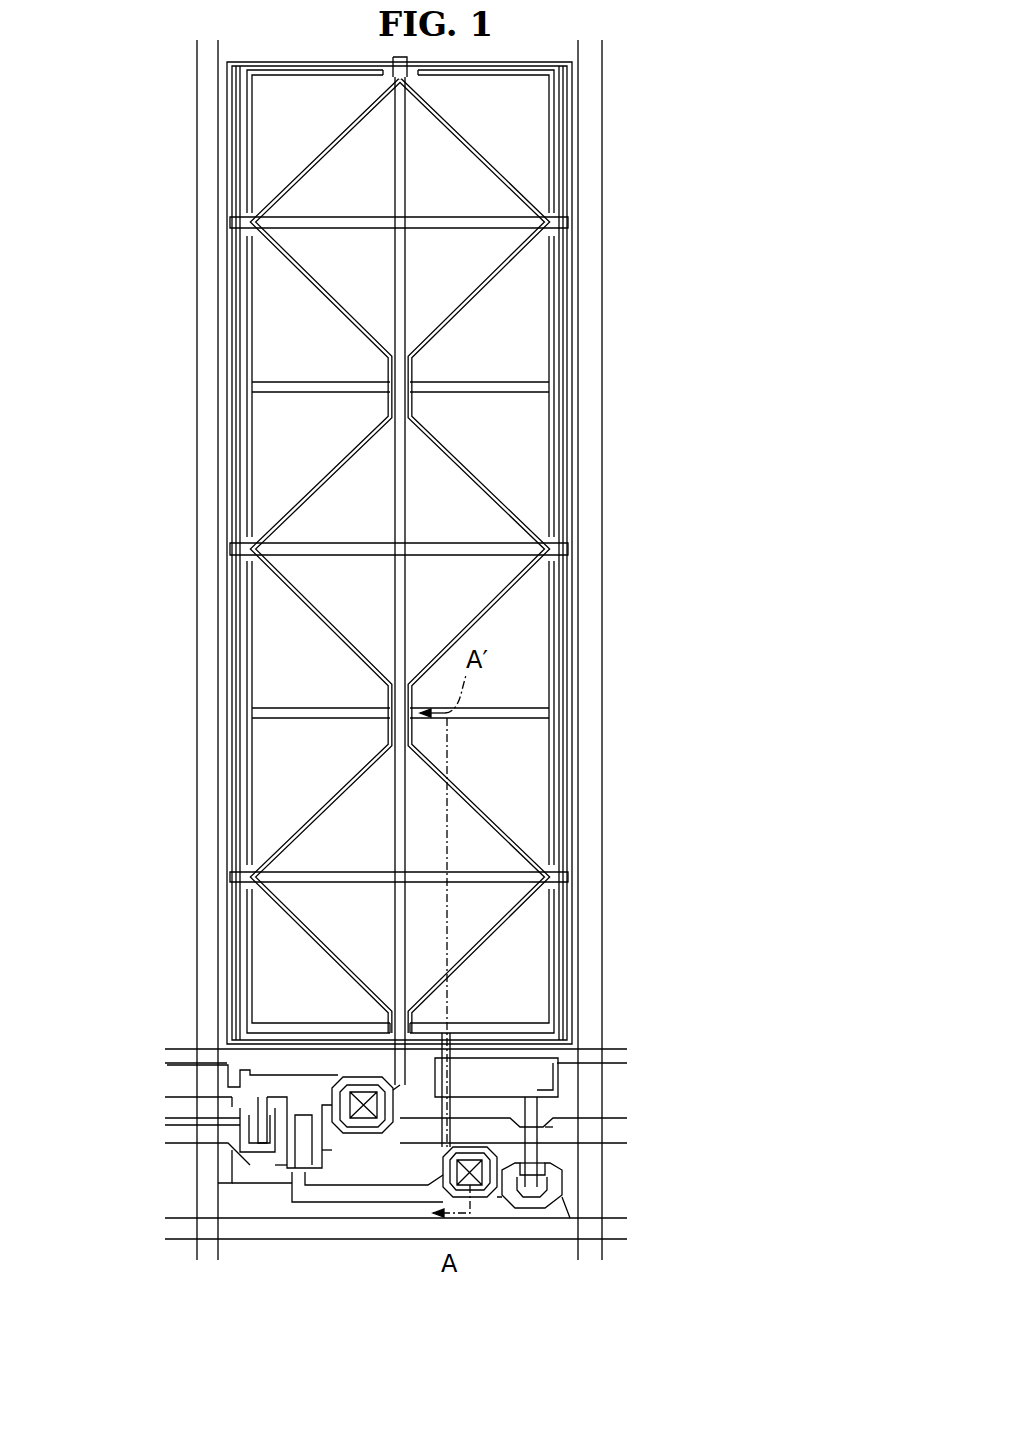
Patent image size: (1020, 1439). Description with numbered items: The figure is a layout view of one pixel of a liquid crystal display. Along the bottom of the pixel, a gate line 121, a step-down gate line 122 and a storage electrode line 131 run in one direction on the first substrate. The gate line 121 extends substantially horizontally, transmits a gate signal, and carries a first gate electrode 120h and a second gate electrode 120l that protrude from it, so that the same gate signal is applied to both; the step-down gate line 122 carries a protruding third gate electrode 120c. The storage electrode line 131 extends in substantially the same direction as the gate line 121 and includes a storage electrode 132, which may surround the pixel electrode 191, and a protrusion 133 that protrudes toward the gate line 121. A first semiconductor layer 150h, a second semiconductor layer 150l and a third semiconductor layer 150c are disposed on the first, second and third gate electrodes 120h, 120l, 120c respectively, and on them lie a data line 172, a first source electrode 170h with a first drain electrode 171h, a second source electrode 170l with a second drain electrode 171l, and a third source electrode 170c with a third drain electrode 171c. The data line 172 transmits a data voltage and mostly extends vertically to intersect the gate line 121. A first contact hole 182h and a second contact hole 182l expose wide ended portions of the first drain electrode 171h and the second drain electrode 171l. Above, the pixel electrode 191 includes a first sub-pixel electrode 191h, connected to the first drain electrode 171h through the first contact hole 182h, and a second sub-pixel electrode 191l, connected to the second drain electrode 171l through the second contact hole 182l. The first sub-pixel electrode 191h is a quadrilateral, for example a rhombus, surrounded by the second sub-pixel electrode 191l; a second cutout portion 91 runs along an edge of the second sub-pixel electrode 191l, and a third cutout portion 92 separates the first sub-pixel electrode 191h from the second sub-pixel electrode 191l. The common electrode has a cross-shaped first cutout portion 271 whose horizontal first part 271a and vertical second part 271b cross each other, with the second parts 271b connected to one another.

The second cutout portion 91 is at (557, 120).
The third cutout portion 92 is at (508, 258).
The pixel electrode 191 is at (502, 571).
The first sub-pixel electrode 191h is at (504, 571).
The second sub-pixel electrode 191l is at (567, 167).
The first cutout portion 271 is at (504, 571).
The first part 271a is at (480, 543).
The second part 271b is at (405, 443).
The data line 172 is at (197, 690).
The storage electrode 132 is at (580, 822).
The storage electrode line 131 is at (607, 1048).
The protrusion 133 is at (560, 1078).
The gate line 121 is at (580, 1122).
The step-down gate line 122 is at (604, 1242).
The first drain electrode 171h is at (305, 1073).
The second drain electrode 171l is at (305, 1190).
The third drain electrode 171c is at (540, 1150).
The first source electrode 170h is at (250, 1145).
The second source electrode 170l is at (345, 1150).
The third source electrode 170c is at (530, 1208).
The first semiconductor layer 150h is at (250, 1100).
The second semiconductor layer 150l is at (290, 1168).
The third semiconductor layer 150c is at (560, 1180).
The first gate electrode 120h is at (245, 1125).
The second gate electrode 120l is at (325, 1090).
The third gate electrode 120c is at (565, 1195).
The first contact hole 182h is at (372, 1135).
The second contact hole 182l is at (470, 1197).